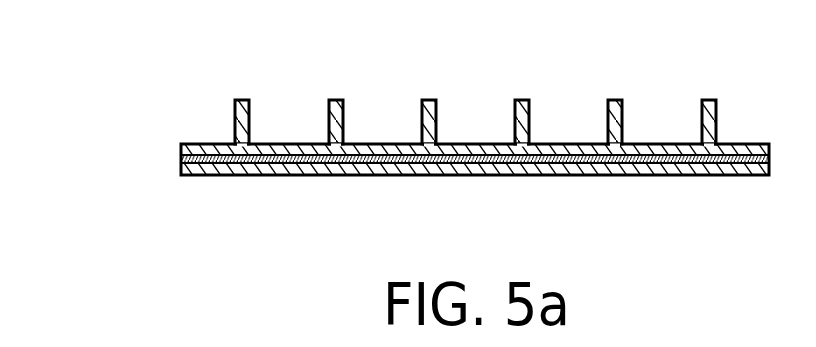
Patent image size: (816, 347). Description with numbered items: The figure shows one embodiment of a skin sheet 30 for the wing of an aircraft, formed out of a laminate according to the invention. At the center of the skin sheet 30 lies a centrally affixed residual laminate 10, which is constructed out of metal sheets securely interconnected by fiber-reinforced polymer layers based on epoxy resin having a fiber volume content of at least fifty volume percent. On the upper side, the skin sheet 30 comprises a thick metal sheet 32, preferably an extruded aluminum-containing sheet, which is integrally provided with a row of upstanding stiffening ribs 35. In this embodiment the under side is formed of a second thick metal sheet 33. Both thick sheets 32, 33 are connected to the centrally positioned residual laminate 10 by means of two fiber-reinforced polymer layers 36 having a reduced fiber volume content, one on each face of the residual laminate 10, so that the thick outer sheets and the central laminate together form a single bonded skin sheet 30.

The skin sheet 30 is at (92, 73).
The sheet 32 is at (181, 149).
The residual laminate 10 is at (181, 159).
The thick metal sheet 33 is at (181, 169).
The stiffening ribs 35 is at (245, 98).
The fiber-reinforced polymer layers 36 is at (631, 153).